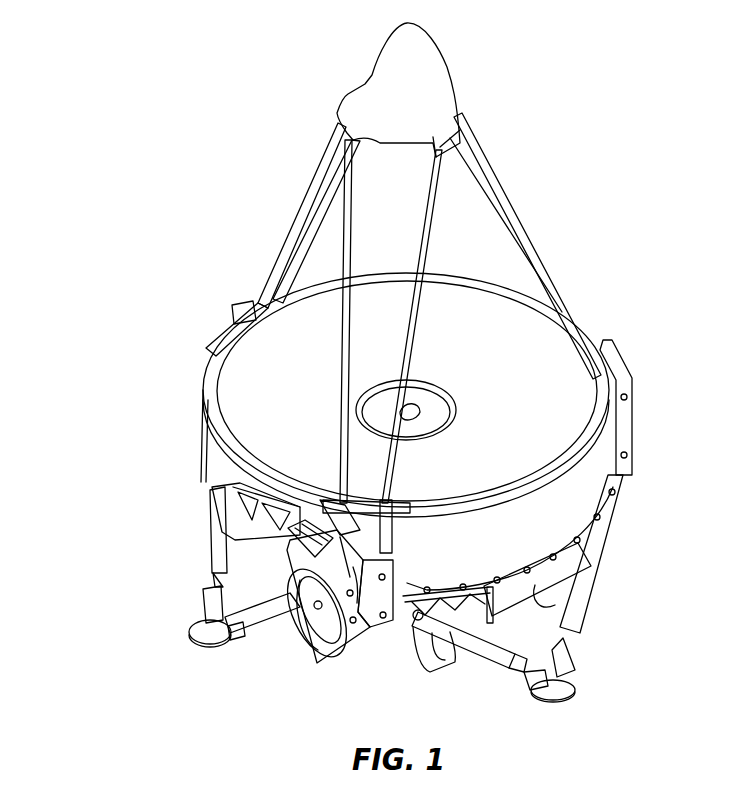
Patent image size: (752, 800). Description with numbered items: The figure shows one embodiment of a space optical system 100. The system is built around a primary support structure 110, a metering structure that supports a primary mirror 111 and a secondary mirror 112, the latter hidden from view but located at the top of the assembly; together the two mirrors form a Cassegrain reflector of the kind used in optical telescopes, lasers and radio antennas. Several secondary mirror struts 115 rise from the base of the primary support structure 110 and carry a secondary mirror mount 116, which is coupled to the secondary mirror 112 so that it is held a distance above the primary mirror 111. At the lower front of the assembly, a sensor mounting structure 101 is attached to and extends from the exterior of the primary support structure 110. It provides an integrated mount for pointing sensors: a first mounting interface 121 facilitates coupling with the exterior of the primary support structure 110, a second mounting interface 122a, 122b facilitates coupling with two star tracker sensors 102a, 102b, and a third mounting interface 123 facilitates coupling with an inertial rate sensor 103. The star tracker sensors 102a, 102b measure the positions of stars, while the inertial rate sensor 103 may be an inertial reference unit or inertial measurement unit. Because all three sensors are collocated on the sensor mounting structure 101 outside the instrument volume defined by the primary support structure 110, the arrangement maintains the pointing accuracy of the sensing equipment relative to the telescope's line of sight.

The space optical system 100 is at (178, 90).
The primary support structure 110 is at (178, 377).
The primary mirror 111 is at (258, 360).
The secondary mirror 112 is at (402, 162).
The secondary mirror struts 115 is at (322, 167).
The secondary mirror mount 116 is at (357, 118).
The first mounting interface 121 is at (407, 580).
The second mounting interface 122a is at (347, 528).
The second mounting interface 122b is at (207, 483).
The third mounting interface 123 is at (357, 623).
The sensor mounting structure 101 is at (283, 637).
The star tracker sensor 102a is at (280, 547).
The star tracker sensor 102b is at (222, 505).
The inertial rate sensor 103 is at (323, 643).